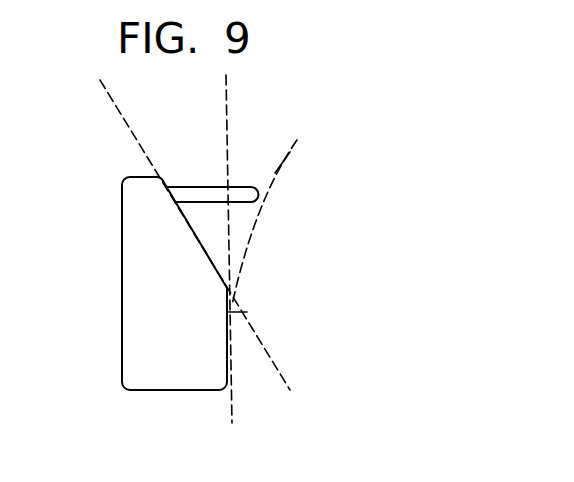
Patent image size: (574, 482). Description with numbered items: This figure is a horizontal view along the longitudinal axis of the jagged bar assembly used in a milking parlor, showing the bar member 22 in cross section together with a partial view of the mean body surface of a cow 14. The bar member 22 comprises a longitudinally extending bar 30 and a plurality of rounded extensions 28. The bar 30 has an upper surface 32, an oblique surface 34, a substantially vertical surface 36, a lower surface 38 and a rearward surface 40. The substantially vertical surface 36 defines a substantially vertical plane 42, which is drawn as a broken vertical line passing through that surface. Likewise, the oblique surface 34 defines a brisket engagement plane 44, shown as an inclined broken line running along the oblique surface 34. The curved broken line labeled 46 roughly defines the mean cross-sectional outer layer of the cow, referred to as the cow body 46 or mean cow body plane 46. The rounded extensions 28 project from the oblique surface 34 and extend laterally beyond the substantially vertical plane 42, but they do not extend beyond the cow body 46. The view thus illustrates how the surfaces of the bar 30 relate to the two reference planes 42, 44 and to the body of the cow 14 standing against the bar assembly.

The cow 14 is at (290, 152).
The bar member 22 is at (170, 297).
The rounded extensions 28 is at (203, 193).
The longitudinally extending bar 30 is at (138, 283).
The upper surface 32 is at (140, 176).
The oblique surface 34 is at (201, 242).
The substantially vertical surface 36 is at (246, 313).
The lower surface 38 is at (168, 391).
The rearward surface 40 is at (122, 308).
The substantially vertical plane 42 is at (226, 122).
The brisket engagement plane 44 is at (273, 363).
The cow body 46 is at (267, 190).